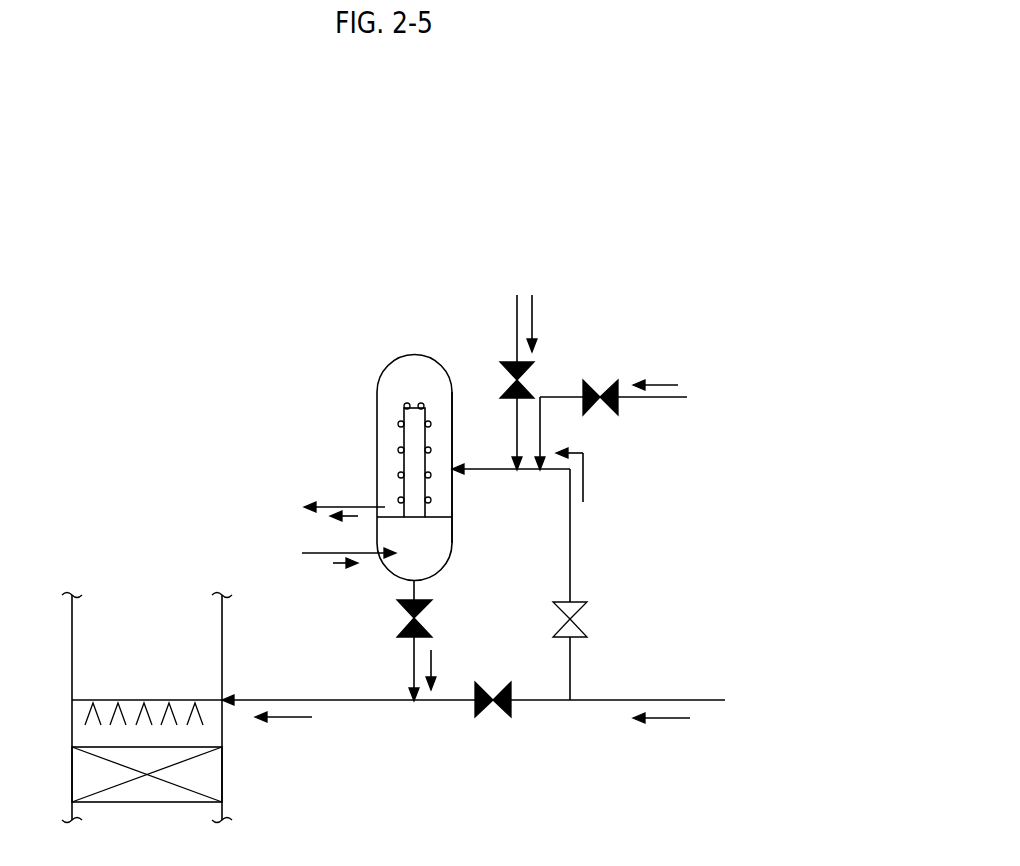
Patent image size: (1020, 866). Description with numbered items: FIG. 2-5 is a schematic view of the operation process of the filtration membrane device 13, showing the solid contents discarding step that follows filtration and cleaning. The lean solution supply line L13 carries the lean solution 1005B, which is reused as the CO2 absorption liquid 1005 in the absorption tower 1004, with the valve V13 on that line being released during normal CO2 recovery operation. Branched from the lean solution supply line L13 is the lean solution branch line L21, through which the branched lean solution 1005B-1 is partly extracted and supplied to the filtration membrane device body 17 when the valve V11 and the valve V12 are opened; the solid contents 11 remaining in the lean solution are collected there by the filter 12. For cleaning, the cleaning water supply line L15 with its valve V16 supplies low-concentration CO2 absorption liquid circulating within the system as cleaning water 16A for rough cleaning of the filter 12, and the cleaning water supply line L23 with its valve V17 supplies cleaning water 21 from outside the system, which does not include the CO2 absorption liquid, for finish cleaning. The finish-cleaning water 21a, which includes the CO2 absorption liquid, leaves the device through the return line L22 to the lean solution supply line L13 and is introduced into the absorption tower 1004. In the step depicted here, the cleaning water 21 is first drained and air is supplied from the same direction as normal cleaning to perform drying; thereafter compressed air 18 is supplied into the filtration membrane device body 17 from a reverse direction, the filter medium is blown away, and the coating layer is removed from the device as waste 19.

The filtration membrane device 13 is at (431, 343).
The solid contents 11 is at (399, 425).
The filter 12 is at (401, 488).
The filtration membrane device body 17 is at (452, 418).
The waste 19 is at (348, 517).
The compressed air 18 is at (340, 564).
The cleaning water supply line L15 is at (516, 322).
The cleaning water 16A is at (533, 322).
The valve V16 is at (502, 381).
The cleaning water supply line L23 is at (558, 397).
The valve V17 is at (600, 416).
The cleaning water 21 is at (659, 381).
The lean solution branch line L21 is at (571, 552).
The branched lean solution 1005B-1 is at (584, 480).
The valve V11 is at (586, 617).
The valve V12 is at (432, 617).
The return line L22 is at (412, 660).
The finish-cleaning water 21a is at (432, 665).
The lean solution supply line L13 is at (672, 699).
The valve V13 is at (500, 717).
The lean solution 1005B is at (660, 721).
The absorption tower 1004 is at (222, 648).
The CO2 absorption liquid 1005 is at (285, 718).